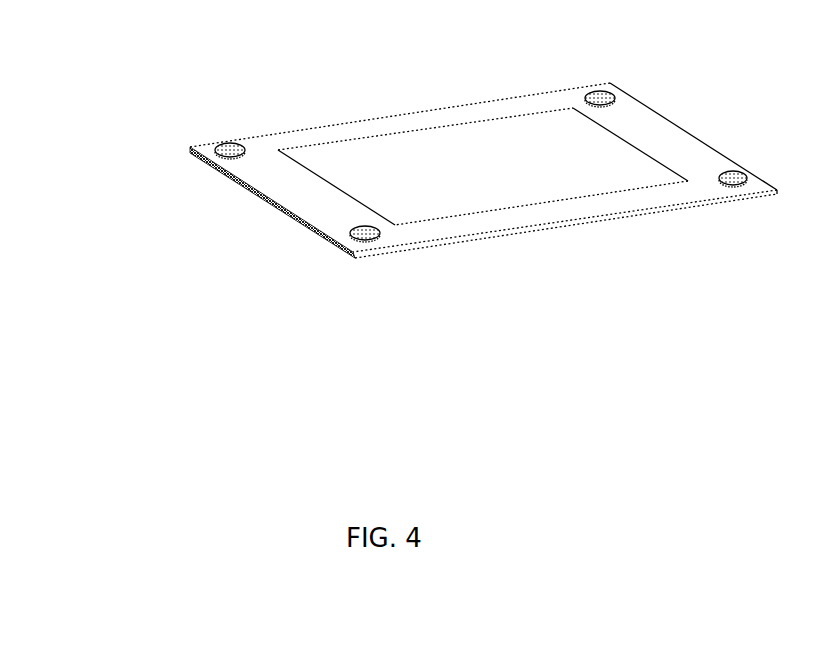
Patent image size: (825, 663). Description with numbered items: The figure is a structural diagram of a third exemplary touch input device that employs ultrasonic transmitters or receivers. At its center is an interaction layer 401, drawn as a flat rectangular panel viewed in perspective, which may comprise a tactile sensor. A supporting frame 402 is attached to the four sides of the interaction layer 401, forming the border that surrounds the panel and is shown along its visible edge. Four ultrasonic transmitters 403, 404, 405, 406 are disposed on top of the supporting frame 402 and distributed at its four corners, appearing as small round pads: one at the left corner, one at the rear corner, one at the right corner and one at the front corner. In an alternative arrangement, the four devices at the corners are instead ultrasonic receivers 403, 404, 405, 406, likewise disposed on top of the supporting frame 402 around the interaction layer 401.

The interaction layer 401 is at (390, 149).
The supporting frame 402 is at (236, 182).
The ultrasonic transmitter 403 is at (214, 148).
The ultrasonic transmitter 404 is at (586, 98).
The ultrasonic transmitter 405 is at (718, 181).
The ultrasonic transmitter 406 is at (349, 236).